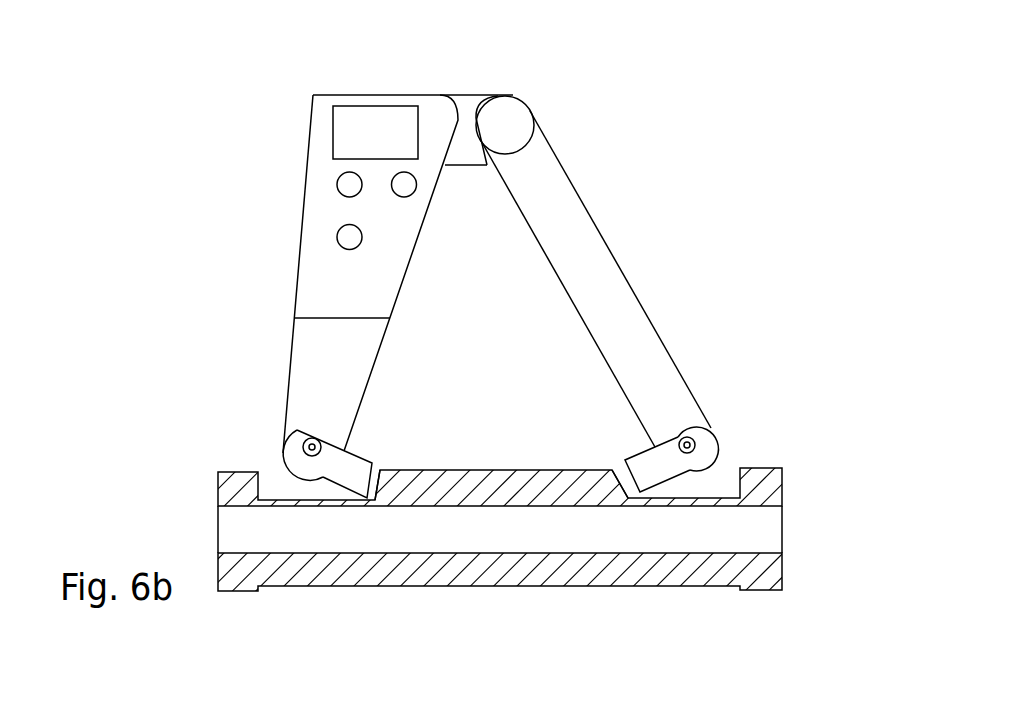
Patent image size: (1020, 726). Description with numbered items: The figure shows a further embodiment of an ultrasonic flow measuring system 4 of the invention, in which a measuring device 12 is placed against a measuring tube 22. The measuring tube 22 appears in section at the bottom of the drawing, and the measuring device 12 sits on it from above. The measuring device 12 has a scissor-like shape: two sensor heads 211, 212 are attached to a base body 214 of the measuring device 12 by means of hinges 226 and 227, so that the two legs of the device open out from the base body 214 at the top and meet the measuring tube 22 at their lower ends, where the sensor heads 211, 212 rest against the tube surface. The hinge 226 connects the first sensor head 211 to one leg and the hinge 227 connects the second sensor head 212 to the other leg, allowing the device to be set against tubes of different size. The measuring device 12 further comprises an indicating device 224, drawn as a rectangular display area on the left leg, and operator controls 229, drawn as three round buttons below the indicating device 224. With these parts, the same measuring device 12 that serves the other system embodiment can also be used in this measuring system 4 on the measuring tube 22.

The ultrasonic flow measuring system 4 is at (494, 315).
The measuring device 12 is at (327, 146).
The measuring tube 22 is at (748, 483).
The sensor head 211 is at (373, 464).
The sensor head 212 is at (620, 462).
The base body 214 is at (479, 109).
The indicating device 224 is at (382, 123).
The hinge 226 is at (311, 446).
The hinge 227 is at (688, 437).
The operator controls 229 is at (349, 184).